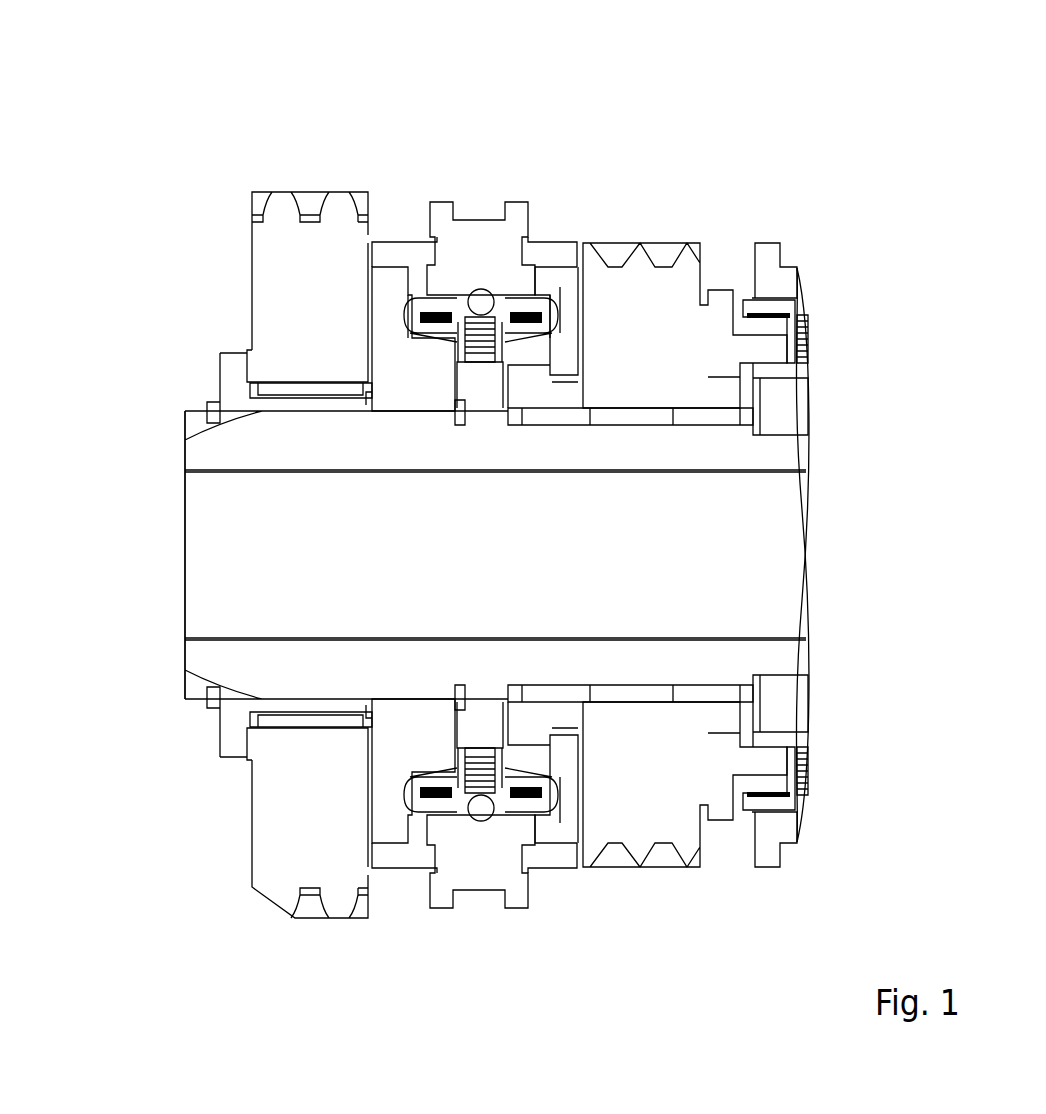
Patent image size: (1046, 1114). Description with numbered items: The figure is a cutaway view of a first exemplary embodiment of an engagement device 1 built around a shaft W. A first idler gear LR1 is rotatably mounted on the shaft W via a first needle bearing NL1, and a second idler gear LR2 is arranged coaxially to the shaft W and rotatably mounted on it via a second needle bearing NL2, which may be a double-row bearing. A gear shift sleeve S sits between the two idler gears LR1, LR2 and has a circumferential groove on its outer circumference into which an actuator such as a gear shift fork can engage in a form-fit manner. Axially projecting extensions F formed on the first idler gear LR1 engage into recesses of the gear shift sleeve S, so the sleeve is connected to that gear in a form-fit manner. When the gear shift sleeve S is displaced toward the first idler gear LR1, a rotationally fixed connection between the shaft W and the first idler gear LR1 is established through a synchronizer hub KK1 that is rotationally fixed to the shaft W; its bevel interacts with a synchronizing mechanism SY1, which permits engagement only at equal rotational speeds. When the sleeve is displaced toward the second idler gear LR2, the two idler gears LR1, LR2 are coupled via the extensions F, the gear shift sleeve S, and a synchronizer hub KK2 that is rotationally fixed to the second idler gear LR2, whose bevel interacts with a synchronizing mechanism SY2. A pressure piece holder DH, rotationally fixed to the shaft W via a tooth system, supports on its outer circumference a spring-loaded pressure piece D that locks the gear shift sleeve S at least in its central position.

The engagement device 1 is at (178, 143).
The shaft W is at (687, 457).
The first idler gear LR1 is at (285, 232).
The second idler gear LR2 is at (672, 303).
The first needle bearing NL1 is at (327, 388).
The second needle bearing NL2 is at (710, 418).
The extensions F is at (392, 238).
The gear shift sleeve S is at (458, 258).
The pressure piece D is at (482, 300).
The pressure piece holder DH is at (483, 397).
The synchronizer hub KK1 is at (420, 397).
The synchronizer hub KK2 is at (565, 348).
The synchronizing mechanism SY1 is at (404, 276).
The synchronizing mechanism SY2 is at (562, 281).